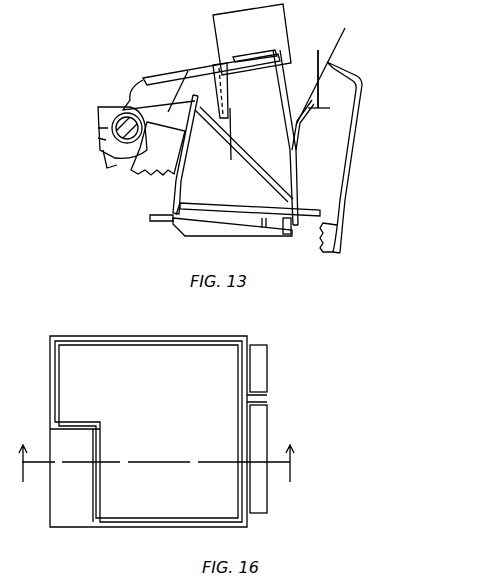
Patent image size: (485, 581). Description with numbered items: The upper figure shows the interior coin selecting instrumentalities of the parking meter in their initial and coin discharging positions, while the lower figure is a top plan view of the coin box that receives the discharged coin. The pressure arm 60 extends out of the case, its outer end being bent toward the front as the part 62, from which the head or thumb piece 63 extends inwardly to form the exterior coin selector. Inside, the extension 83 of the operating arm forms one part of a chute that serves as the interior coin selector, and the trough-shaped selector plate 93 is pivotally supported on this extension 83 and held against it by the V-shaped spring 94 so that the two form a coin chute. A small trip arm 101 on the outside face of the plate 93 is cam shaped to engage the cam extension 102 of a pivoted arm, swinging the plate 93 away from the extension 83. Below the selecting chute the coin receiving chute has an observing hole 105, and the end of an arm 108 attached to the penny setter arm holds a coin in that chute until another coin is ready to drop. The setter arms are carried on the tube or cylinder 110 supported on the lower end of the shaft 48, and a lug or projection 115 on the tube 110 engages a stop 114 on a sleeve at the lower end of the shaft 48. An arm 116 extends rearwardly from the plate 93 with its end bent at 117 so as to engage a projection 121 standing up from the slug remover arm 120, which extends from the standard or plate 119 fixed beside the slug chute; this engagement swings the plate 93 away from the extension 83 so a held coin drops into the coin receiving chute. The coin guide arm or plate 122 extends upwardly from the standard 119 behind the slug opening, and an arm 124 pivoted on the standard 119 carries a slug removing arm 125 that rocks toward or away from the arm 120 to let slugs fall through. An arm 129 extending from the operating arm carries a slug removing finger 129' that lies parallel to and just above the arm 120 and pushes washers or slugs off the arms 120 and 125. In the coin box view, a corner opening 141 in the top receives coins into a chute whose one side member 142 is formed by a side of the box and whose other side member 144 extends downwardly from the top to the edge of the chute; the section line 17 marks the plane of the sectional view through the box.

In FIG. 13, the shaft 48 is at (127, 118).
In FIG. 13, the stop 114 is at (118, 113).
In FIG. 13, the lug or projection 115 is at (100, 142).
In FIG. 13, the tube or cylinder 110 is at (108, 170).
In FIG. 13, the arm 124 is at (201, 83).
In FIG. 13, the arm 108 is at (158, 148).
In FIG. 13, the observing hole or opening 105 is at (202, 138).
In FIG. 13, the cam extension 102 is at (176, 186).
In FIG. 13, the spring 94 is at (244, 166).
In FIG. 13, the extension 83 is at (205, 204).
In FIG. 13, the trip arm 101 is at (170, 236).
In FIG. 13, the selector plate 93 is at (264, 228).
In FIG. 13, the standard member 119 is at (252, 39).
In FIG. 13, the coin guide arm or plate 122 is at (245, 62).
In FIG. 13, the arm 129 is at (279, 38).
In FIG. 13, the slug removing finger 129' is at (336, 69).
In FIG. 13, the slug removing arm 125 is at (230, 108).
In FIG. 13, the arm 116 is at (296, 172).
In FIG. 13, the bent end 117 is at (298, 118).
In FIG. 13, the slug remover arm 120 is at (318, 78).
In FIG. 13, the projection 121 is at (322, 108).
In FIG. 13, the pressure arm 60 is at (330, 64).
In FIG. 13, the bent outer end of pressure arm 62 is at (360, 160).
In FIG. 13, the head or thumb piece 63 is at (335, 255).
In FIG. 16, the opening 141 is at (66, 509).
In FIG. 16, the side member 142 is at (78, 519).
In FIG. 16, the side member 144 is at (77, 436).
In FIG. 16, the section line 17 is at (155, 454).